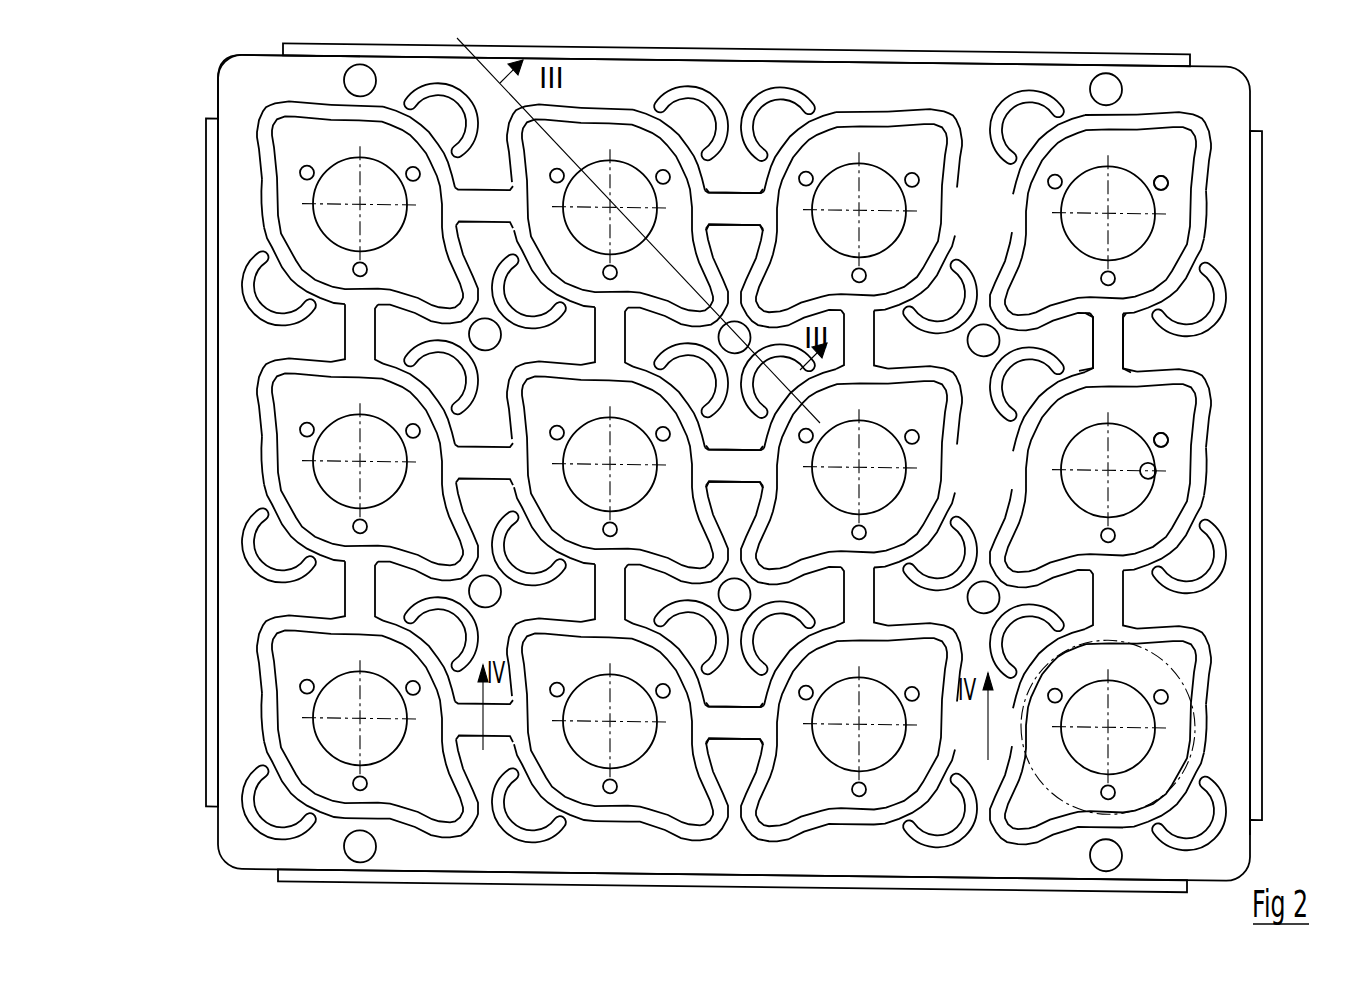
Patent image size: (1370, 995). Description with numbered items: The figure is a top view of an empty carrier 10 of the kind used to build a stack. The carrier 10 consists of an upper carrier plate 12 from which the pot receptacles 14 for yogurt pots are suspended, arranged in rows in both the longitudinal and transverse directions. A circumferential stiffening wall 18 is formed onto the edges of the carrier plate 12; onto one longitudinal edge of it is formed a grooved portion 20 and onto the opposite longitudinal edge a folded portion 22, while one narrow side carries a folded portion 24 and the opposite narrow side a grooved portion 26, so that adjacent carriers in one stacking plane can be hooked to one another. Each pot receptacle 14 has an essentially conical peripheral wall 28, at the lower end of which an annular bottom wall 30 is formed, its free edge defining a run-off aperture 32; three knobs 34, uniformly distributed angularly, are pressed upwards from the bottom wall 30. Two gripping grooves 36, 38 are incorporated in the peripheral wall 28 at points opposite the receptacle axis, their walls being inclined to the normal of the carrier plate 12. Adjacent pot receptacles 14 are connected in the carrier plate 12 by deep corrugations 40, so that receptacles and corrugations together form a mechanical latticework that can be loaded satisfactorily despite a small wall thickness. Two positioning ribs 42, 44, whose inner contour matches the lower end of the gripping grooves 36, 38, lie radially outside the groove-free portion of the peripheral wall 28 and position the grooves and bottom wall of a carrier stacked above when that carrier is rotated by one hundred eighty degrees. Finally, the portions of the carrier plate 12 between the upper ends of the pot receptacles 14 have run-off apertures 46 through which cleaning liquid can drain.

The carrier 10 is at (702, 468).
The carrier plate 12 is at (238, 400).
The pot receptacle 14 is at (292, 207).
The stiffening wall 18 is at (214, 83).
The grooved portion 20 is at (872, 50).
The folded portion 22 is at (721, 870).
The folded portion 24 is at (205, 548).
The grooved portion 26 is at (1254, 727).
The peripheral wall 28 is at (1266, 688).
The annular bottom wall 30 is at (1176, 496).
The run-off aperture 32 is at (1158, 470).
The knob 34 is at (1165, 432).
The gripping groove 36 is at (946, 378).
The gripping groove 38 is at (778, 513).
The corrugation 40 is at (1125, 341).
The positioning rib 42 is at (1262, 282).
The positioning rib 44 is at (1168, 184).
The run-off aperture 46 is at (1042, 103).